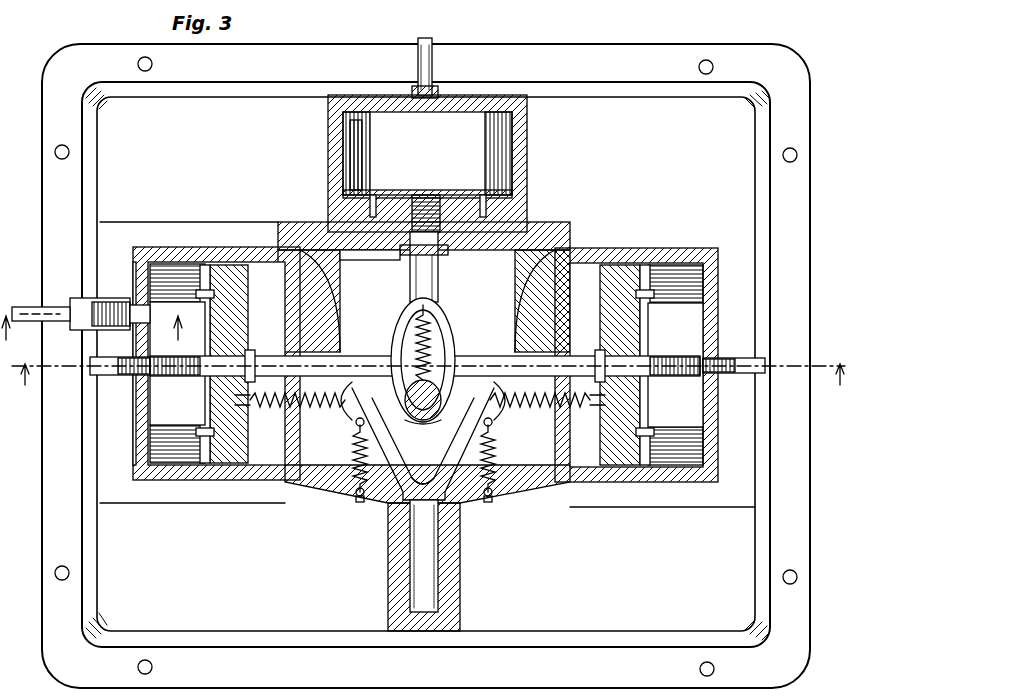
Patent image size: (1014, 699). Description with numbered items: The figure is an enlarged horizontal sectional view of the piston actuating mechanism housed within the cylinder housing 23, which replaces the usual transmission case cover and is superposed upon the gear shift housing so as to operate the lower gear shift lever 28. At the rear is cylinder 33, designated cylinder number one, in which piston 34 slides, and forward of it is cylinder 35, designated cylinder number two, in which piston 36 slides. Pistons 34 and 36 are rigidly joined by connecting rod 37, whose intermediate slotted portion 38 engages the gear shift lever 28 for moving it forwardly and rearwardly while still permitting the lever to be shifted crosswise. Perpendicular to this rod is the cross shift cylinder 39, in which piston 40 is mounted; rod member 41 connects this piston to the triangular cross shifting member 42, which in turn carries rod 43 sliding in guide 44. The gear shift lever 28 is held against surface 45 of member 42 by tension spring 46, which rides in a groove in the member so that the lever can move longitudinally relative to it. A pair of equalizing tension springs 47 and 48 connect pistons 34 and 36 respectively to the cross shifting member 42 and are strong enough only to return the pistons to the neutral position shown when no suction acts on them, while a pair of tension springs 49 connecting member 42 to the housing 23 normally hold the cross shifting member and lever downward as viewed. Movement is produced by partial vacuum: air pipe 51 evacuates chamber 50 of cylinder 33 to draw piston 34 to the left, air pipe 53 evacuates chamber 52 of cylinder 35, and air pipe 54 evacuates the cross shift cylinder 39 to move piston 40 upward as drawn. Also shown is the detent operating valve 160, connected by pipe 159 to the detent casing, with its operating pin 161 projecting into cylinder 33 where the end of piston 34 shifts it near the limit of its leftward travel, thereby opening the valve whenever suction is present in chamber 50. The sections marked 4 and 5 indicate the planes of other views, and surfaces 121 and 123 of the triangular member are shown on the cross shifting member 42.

The cylinder housing 23 is at (731, 148).
The gear shift lever 28 is at (540, 290).
The rear cylinder 33 is at (170, 247).
The piston 34 is at (239, 364).
The cylinder 35 is at (648, 248).
The piston 36 is at (600, 323).
The connecting rod 37 is at (318, 360).
The slotted portion 38 is at (440, 310).
The cross shift cylinder 39 is at (527, 152).
The piston 40 is at (370, 251).
The rod member 41 is at (410, 270).
The cross shifting member 42 is at (398, 465).
The rod 43 is at (425, 552).
The guide 44 is at (460, 592).
The surface 45 is at (423, 436).
The tension spring 46 is at (445, 330).
The equalizing tension spring 47 is at (270, 430).
The equalizing tension spring 48 is at (580, 430).
The tension springs 49 is at (356, 450).
The chamber 50 is at (177, 363).
The air pipe 51 is at (100, 372).
The chamber 52 is at (680, 440).
The air pipe 53 is at (392, 135).
The air pipe 54 is at (440, 62).
The yoke stem 121 is at (428, 467).
The cam 123 is at (423, 401).
The pipe 159 is at (36, 297).
The detent operating valve 160 is at (104, 300).
The operating pin 161 is at (148, 262).
The section line 4- 4 is at (428, 362).
The section line 5- 5 is at (91, 315).